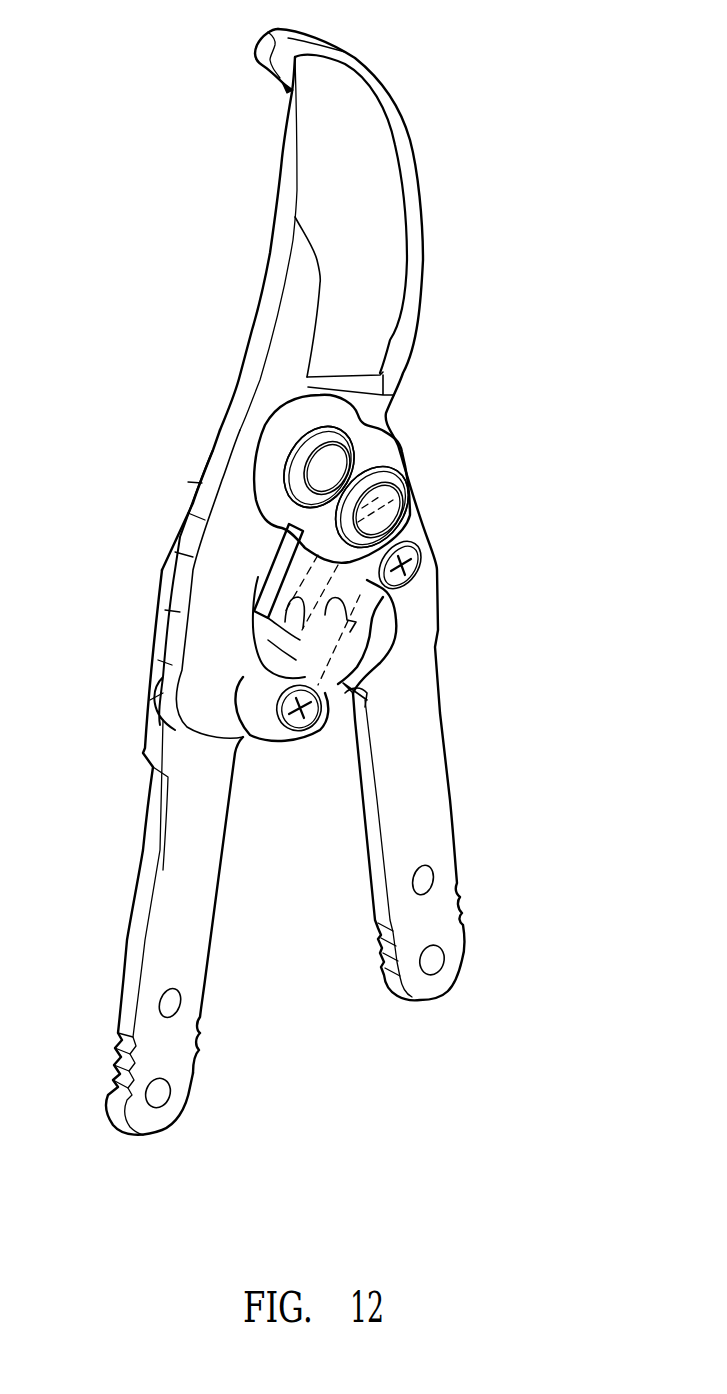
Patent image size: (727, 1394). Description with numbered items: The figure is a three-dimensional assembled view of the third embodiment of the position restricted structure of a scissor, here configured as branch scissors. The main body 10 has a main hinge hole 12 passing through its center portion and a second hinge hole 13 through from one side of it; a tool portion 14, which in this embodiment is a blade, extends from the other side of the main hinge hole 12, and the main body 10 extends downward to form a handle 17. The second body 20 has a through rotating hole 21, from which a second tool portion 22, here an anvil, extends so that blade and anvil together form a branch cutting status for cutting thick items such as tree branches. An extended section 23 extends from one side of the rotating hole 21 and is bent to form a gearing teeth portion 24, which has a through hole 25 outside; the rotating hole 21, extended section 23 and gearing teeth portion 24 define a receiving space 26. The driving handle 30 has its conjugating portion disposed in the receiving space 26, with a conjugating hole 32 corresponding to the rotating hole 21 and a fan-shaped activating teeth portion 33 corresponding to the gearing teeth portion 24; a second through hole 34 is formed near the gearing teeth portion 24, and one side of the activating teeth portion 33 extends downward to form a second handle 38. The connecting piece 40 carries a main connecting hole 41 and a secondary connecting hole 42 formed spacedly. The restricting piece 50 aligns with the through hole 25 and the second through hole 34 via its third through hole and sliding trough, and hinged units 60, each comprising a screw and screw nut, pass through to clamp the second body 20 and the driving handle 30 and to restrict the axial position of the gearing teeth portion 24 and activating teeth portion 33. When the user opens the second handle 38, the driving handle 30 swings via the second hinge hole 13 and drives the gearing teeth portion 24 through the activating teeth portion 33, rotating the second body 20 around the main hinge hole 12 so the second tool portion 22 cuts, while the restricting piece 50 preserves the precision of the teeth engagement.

The main body 10 is at (173, 828).
The main hinge hole 12 is at (243, 419).
The second hinge hole 13 is at (459, 507).
The tool portion 14 is at (397, 117).
The handle 17 is at (167, 945).
The second body 20 is at (233, 511).
The rotating hole 21 is at (243, 419).
The second tool portion 22 is at (357, 177).
The extended section 23 is at (195, 635).
The gearing teeth portion 24 is at (392, 640).
The through hole 25 is at (298, 747).
The receiving space 26 is at (260, 550).
The driving handle 30 is at (439, 734).
The conjugating hole 32 is at (459, 507).
The activating teeth portion 33 is at (245, 578).
The second through hole 34 is at (424, 546).
The second handle 38 is at (447, 910).
The connecting piece 40 is at (399, 451).
The main connecting hole 41 is at (322, 447).
The secondary connecting hole 42 is at (410, 490).
The restricting piece 50 is at (238, 692).
The hinged unit 60 is at (322, 447).